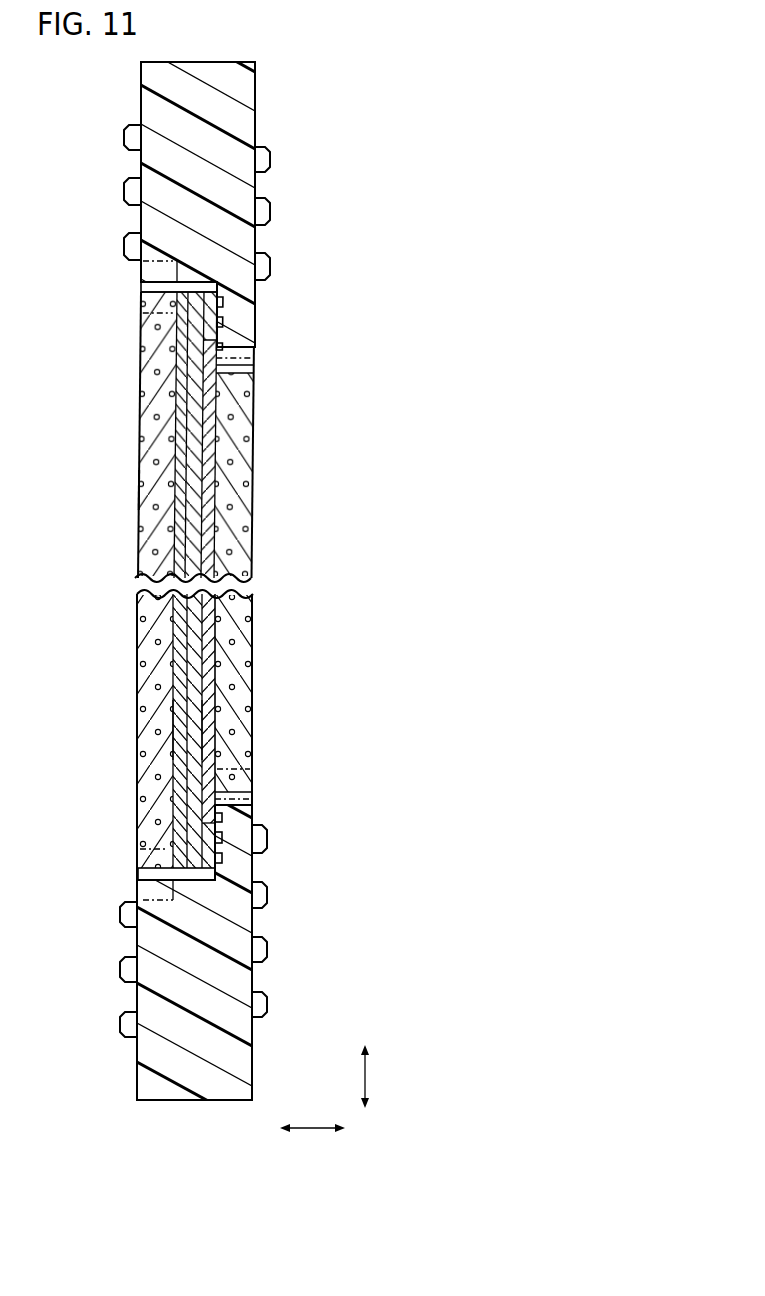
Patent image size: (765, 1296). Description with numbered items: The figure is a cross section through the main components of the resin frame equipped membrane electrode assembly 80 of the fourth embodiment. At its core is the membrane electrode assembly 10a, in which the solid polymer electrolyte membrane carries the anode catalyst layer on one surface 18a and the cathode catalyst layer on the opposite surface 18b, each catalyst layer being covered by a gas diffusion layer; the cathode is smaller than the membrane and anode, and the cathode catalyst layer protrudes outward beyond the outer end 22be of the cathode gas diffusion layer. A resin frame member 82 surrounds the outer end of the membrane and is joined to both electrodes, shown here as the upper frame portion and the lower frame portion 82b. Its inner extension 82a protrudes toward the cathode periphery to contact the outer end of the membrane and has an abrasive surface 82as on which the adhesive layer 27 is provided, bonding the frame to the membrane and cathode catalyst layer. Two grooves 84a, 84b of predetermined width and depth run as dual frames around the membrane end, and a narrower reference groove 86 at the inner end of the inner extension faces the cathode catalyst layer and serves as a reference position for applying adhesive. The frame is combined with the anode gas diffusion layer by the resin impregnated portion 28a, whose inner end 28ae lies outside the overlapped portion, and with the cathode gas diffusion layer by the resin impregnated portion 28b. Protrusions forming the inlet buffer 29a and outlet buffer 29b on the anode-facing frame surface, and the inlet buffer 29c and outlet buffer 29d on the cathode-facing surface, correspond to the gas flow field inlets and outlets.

The resin frame equipped membrane electrode assembly 80 is at (374, 58).
The resin frame member 82 is at (260, 61).
The inner extension 82a is at (238, 348).
The abrasive surface 82as is at (172, 316).
The lower separator 82b is at (194, 940).
The adhesive layer 27 is at (255, 284).
The resin impregnated portion 28a is at (146, 863).
The inner end of the resin impregnated portion 28ae is at (140, 327).
The resin impregnated portion 28b is at (255, 777).
The inlet buffer 29a is at (124, 190).
The outlet buffer 29b is at (120, 968).
The inlet buffer 29c is at (270, 212).
The outlet buffer 29d is at (265, 950).
The membrane electrode assembly 10a is at (137, 490).
The one surface of the solid polymer electrolyte membrane 18a is at (175, 735).
The surface of the solid polymer electrolyte membrane 18b is at (207, 722).
The outer end of the gas diffusion layer 22be is at (215, 362).
The groove 84a is at (222, 311).
The groove 84b is at (222, 329).
The reference groove 86 is at (236, 377).